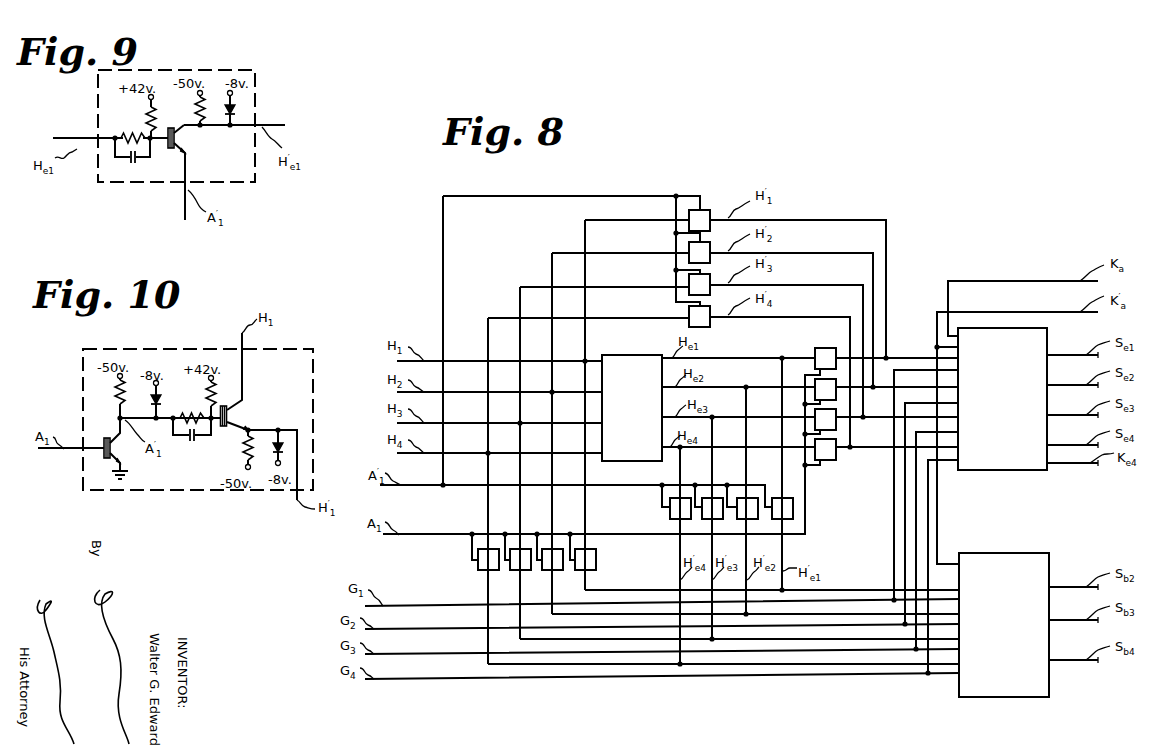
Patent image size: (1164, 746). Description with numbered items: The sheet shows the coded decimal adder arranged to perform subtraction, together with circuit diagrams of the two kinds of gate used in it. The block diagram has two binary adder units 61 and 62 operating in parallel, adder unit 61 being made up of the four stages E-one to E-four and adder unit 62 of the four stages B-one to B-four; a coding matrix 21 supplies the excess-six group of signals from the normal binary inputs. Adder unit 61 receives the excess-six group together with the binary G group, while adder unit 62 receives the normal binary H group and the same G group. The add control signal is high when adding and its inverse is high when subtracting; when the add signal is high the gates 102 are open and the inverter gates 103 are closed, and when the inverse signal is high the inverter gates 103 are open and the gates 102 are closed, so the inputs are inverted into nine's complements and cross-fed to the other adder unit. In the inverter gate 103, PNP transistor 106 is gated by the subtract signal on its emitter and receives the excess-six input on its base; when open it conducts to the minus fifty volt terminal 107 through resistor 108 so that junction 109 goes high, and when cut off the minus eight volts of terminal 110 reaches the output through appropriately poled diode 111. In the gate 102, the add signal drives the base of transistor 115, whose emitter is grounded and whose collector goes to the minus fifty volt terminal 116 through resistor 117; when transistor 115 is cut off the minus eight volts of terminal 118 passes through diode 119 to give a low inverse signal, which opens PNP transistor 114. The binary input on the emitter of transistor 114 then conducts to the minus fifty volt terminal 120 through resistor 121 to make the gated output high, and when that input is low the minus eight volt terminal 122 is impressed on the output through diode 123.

In FIG. 9, the inverter gate 103 is at (215, 70).
In FIG. 8, the inverter gate 103 is at (707, 210).
In FIG. 9, the transistor 106 is at (175, 147).
In FIG. 9, the -50 volt terminal 107 is at (198, 97).
In FIG. 9, the resistor 108 is at (230, 114).
In FIG. 9, the junction 109 is at (211, 126).
In FIG. 9, the -8 volt terminal 110 is at (250, 93).
In FIG. 9, the diode 111 is at (248, 111).
In FIG. 10, the gate 102 is at (279, 349).
In FIG. 8, the gate 102 is at (836, 462).
In FIG. 10, the transistor 114 is at (229, 410).
In FIG. 10, the transistor 115 is at (103, 451).
In FIG. 10, the -50 volt terminal 116 is at (117, 377).
In FIG. 10, the resistor 117 is at (118, 399).
In FIG. 10, the -8 volt terminal 118 is at (159, 384).
In FIG. 10, the diode 119 is at (160, 402).
In FIG. 10, the -50 volt terminal 120 is at (246, 466).
In FIG. 10, the resistor 121 is at (246, 447).
In FIG. 10, the -8 volt terminal 122 is at (281, 463).
In FIG. 10, the diode 123 is at (283, 448).
In FIG. 8, the coding matrix 21 is at (624, 440).
In FIG. 8, the adder unit 61 is at (1047, 333).
In FIG. 8, the adder unit 62 is at (1025, 553).